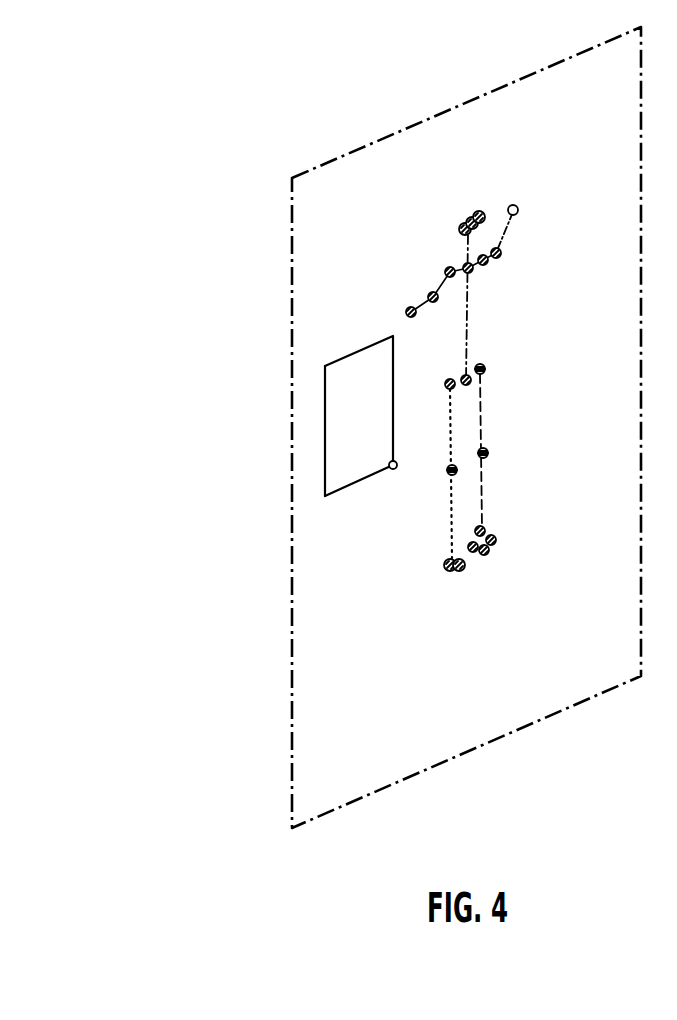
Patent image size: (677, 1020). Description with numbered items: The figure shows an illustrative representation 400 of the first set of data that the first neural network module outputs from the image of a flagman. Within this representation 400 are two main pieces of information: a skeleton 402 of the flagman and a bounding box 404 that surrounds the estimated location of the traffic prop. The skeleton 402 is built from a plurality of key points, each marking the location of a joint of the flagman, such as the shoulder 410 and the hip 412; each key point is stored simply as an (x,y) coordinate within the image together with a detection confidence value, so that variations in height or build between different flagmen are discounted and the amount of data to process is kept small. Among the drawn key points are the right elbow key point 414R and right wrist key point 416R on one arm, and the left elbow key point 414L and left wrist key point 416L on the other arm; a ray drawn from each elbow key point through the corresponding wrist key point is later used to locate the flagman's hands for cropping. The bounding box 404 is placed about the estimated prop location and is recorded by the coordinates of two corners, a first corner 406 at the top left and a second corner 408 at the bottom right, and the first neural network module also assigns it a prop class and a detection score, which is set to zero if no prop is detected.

The illustrative representation 400 is at (265, 179).
The skeleton 402 is at (518, 132).
The bounding box 404 is at (314, 427).
The first corner 406 is at (325, 364).
The second corner 408 is at (396, 469).
The shoulder 410 is at (450, 266).
The hip 412 is at (453, 389).
The right elbow key point 414R is at (433, 291).
The left elbow key point 414L is at (488, 265).
The right wrist key point 416R is at (406, 308).
The left wrist key point 416L is at (516, 205).